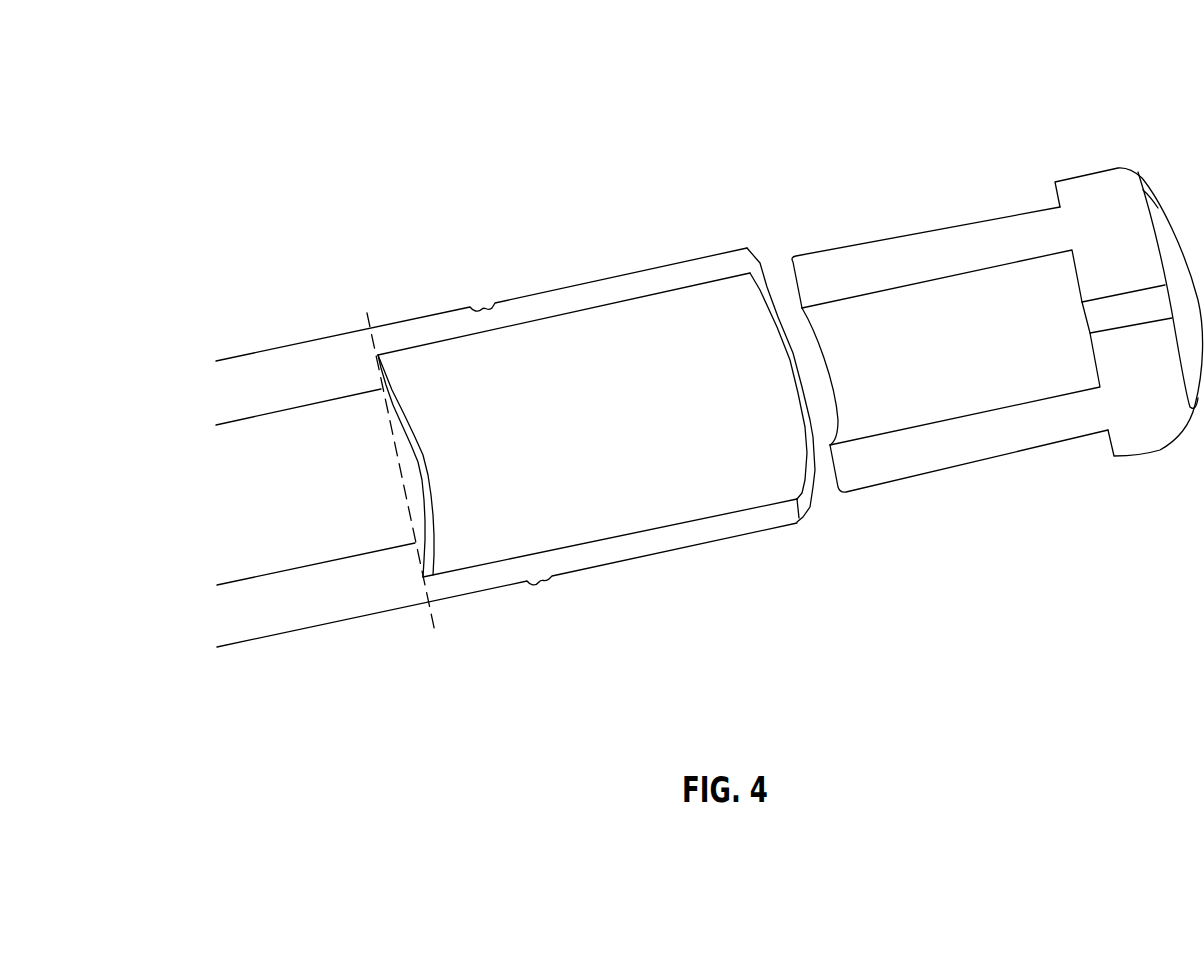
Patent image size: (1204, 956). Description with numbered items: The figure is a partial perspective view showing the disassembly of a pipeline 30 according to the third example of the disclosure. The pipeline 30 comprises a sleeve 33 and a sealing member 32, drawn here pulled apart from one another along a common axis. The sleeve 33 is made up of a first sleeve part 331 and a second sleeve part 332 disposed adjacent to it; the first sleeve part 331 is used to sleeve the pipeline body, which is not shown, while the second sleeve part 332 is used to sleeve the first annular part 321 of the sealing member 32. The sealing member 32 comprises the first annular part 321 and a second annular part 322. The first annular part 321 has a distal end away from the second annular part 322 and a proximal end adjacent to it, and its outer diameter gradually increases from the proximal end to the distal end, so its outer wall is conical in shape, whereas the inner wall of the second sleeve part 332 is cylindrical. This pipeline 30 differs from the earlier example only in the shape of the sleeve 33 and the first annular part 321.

The pipeline 30 is at (697, 374).
The sleeve 33 is at (352, 257).
The first sleeve part 331 is at (287, 373).
The second sleeve part 332 is at (430, 330).
The sealing member 32 is at (997, 107).
The first annular part 321 is at (987, 242).
The second annular part 322 is at (1102, 213).